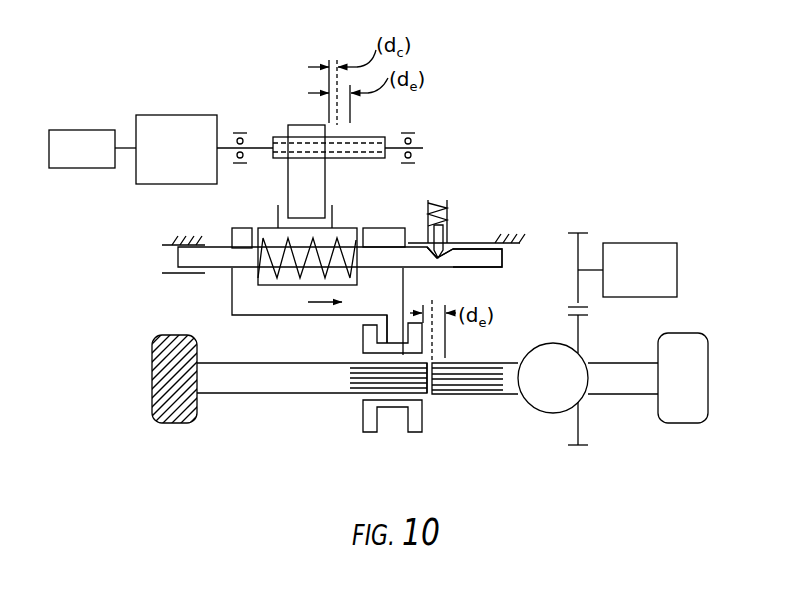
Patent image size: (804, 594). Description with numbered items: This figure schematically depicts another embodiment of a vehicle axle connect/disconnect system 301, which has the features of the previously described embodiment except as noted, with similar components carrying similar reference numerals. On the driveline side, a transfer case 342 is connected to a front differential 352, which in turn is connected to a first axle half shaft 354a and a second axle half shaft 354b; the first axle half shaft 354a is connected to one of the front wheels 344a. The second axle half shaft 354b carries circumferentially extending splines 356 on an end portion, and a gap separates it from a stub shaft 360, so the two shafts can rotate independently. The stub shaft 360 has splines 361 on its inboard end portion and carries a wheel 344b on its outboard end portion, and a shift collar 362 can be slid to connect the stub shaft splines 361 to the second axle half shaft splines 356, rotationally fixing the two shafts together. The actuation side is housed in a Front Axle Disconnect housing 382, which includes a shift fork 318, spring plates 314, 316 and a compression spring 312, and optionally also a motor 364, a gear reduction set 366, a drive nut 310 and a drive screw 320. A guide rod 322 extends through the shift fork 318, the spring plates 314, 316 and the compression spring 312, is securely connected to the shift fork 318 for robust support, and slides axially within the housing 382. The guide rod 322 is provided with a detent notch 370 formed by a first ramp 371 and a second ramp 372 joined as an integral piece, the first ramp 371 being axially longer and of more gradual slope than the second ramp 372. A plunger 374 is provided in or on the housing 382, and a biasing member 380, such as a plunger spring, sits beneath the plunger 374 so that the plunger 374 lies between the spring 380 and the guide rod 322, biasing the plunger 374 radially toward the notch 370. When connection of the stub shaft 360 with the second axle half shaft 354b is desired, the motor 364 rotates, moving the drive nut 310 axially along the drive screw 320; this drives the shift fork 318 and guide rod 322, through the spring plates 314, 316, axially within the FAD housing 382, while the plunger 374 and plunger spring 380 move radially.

The connect/disconnect system 301 is at (600, 93).
The drive nut 310 is at (300, 130).
The compression spring 312 is at (297, 268).
The spring plate 314 is at (258, 226).
The spring plate 316 is at (335, 228).
The shift fork 318 is at (232, 285).
The drive screw 320 is at (362, 135).
The guide rod 322 is at (178, 255).
The controller 342 is at (678, 270).
The wheel 344a is at (690, 423).
The wheel 344b is at (170, 423).
The motor 352 is at (569, 391).
The motor shaft 354a is at (612, 397).
The second axle half shaft 354b is at (518, 397).
The splines 356 is at (482, 396).
The stub shaft 360 is at (247, 393).
The shaft end 361 is at (428, 405).
The shift fork 362 is at (363, 405).
The motor 364 is at (81, 130).
The gear reduction set 366 is at (178, 115).
The detent notch 370 is at (444, 259).
The first ramp 371 is at (478, 270).
The second ramp 372 is at (430, 255).
The plunger 374 is at (440, 240).
The biasing member 380 is at (447, 205).
The FAD housing 382 is at (528, 232).